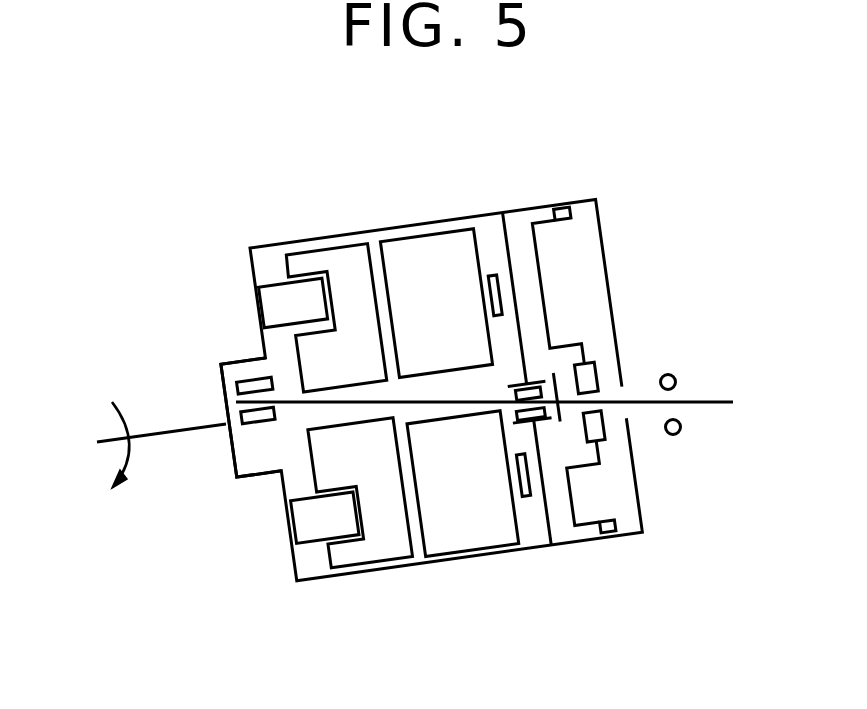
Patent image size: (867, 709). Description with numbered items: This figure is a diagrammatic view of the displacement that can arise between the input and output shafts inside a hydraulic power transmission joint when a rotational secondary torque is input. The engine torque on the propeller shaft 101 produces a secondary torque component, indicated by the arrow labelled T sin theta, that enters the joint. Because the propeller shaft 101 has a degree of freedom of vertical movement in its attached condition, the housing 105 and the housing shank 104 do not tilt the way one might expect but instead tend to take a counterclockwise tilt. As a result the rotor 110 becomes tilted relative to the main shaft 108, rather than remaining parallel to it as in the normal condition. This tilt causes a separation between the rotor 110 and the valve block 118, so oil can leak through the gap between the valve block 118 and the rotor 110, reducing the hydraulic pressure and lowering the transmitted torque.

The propeller shaft 101 is at (158, 433).
The housing shank 104 is at (243, 477).
The housing 105 is at (383, 226).
The main shaft 108 is at (645, 402).
The rotor 110 is at (335, 260).
The valve block 118 is at (447, 255).